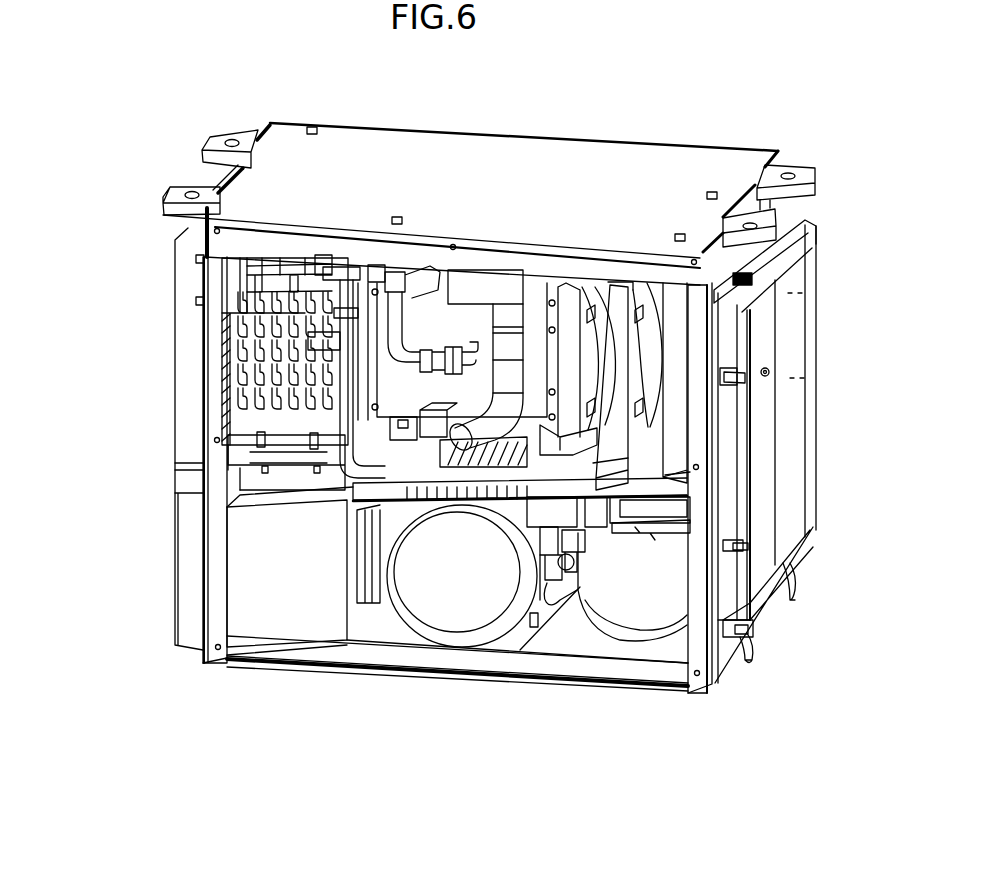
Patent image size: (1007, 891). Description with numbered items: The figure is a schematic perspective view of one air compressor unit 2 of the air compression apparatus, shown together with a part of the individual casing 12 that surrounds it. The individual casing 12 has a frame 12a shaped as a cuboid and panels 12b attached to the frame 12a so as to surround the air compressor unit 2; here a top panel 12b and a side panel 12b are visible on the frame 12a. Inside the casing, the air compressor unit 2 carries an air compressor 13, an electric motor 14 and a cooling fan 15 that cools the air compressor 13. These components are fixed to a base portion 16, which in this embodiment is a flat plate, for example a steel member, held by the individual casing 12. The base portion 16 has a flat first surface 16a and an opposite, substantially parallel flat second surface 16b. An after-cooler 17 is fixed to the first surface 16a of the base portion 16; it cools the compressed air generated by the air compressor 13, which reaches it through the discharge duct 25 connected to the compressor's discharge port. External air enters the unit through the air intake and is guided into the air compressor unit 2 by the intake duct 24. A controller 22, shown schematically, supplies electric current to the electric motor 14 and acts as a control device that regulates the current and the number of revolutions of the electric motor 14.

The air compressor unit 2 is at (584, 697).
The individual casing 12 is at (760, 145).
The frame 12a is at (213, 580).
The panel 12b is at (368, 157).
The air compressor 13 is at (380, 432).
The electric motor 14 is at (447, 613).
The cooling fan 15 is at (612, 287).
The base portion 16 is at (293, 472).
The first surface 16a is at (553, 475).
The second surface 16b is at (453, 507).
The after-cooler 17 is at (227, 352).
The controller 22 is at (285, 613).
The intake duct 24 is at (510, 340).
The discharge duct 25 is at (395, 325).